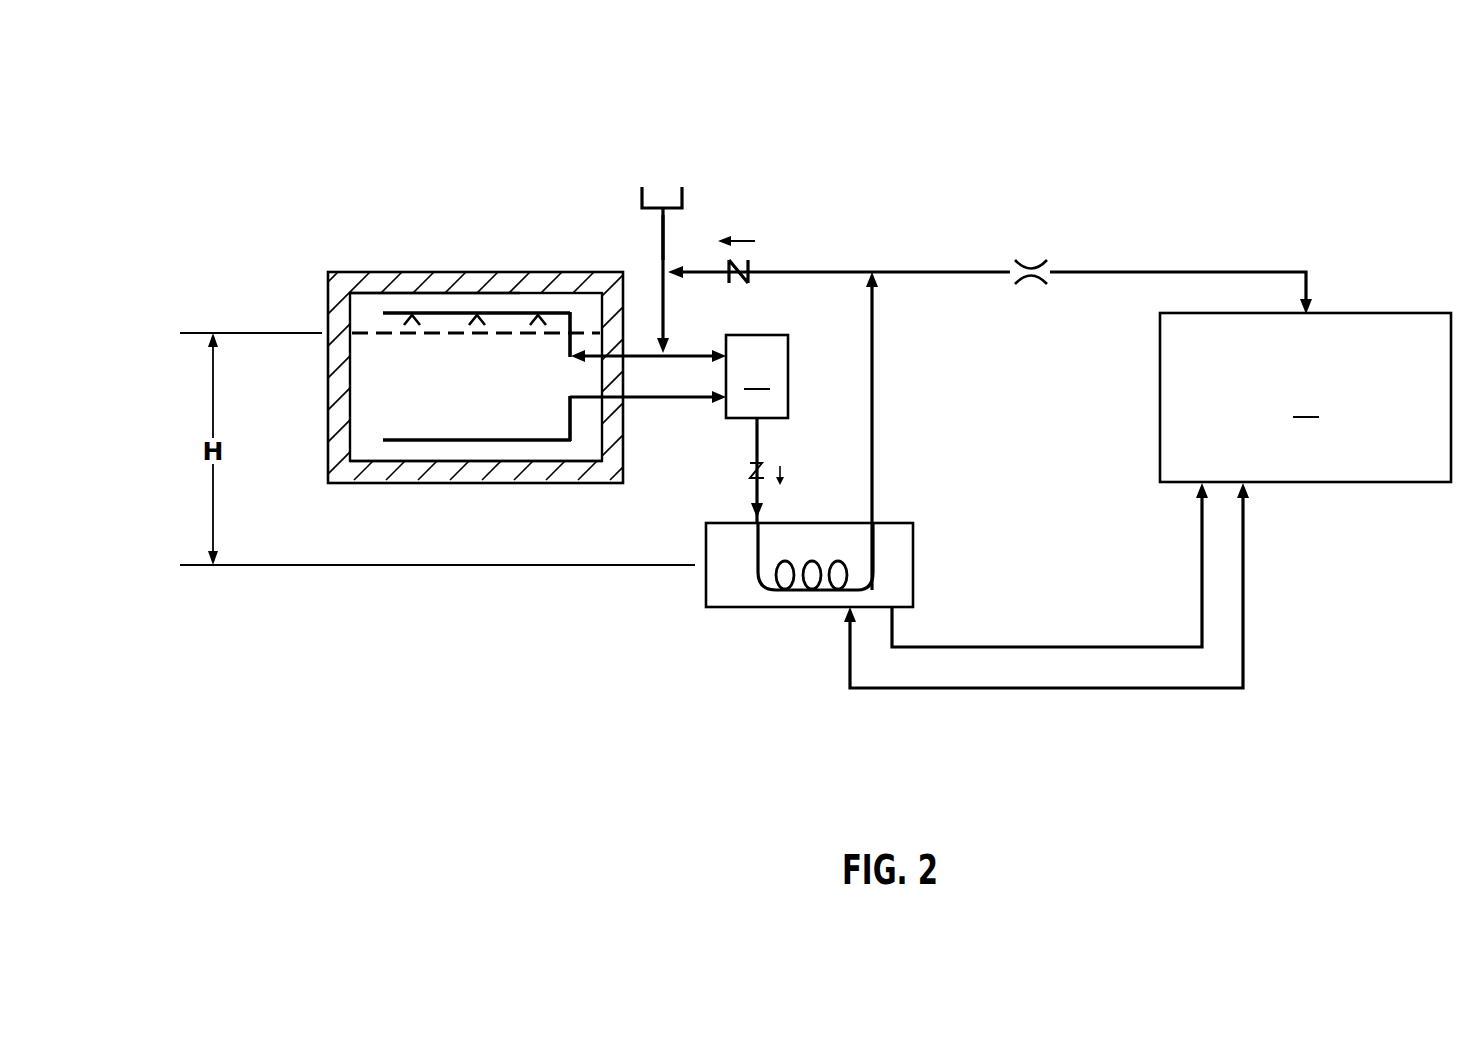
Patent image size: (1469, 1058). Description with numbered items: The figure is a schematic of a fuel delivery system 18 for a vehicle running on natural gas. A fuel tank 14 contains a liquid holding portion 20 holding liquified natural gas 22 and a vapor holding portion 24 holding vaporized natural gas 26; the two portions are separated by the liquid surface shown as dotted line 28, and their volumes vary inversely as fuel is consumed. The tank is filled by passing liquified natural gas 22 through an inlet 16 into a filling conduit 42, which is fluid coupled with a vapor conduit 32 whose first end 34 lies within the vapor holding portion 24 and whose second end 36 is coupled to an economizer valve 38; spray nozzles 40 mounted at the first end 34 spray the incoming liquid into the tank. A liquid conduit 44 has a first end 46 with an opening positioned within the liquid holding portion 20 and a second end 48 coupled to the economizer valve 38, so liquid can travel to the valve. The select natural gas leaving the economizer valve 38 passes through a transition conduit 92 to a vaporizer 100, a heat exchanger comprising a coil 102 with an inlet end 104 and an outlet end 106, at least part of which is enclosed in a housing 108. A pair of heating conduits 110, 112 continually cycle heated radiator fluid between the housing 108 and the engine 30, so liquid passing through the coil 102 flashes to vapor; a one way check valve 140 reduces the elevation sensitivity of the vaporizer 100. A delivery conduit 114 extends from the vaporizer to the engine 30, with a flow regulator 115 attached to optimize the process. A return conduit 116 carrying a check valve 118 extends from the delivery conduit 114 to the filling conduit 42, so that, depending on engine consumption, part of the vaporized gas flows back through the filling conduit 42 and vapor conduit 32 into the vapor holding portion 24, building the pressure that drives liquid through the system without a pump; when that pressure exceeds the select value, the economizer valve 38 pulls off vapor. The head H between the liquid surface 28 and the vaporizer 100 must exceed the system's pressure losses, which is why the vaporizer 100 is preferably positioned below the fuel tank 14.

The fuel tank 14 is at (373, 470).
The inlet 16 is at (684, 196).
The fuel delivery system 18 is at (1024, 132).
The liquid holding portion 20 is at (353, 405).
The liquified natural gas 22 is at (508, 450).
The vapor holding portion 24 is at (362, 296).
The vaporized natural gas 26 is at (455, 303).
The surface of liquified natural gas 28 is at (386, 338).
The engine 30 is at (1305, 397).
The vapor conduit 32 is at (572, 323).
The first end of vapor conduit 34 is at (397, 308).
The second end of vapor conduit 36 is at (683, 352).
The economizer valve 38 is at (757, 376).
The spray nozzles 40 is at (480, 325).
The filling conduit 42 is at (667, 238).
The liquid conduit 44 is at (575, 420).
The first end of liquid conduit 46 is at (433, 430).
The second end of liquid conduit 48 is at (680, 400).
The transition conduit 92 is at (757, 462).
The vaporizer 100 is at (720, 640).
The coil 102 is at (797, 591).
The inlet end 104 is at (752, 523).
The outlet end 106 is at (875, 523).
The housing 108 is at (915, 577).
The heating conduit 110 is at (1118, 688).
The heating conduit 112 is at (1083, 647).
The delivery conduit 114 is at (1158, 272).
The flow regulator 115 is at (1035, 263).
The return conduit 116 is at (818, 272).
The check valve 118 is at (745, 263).
The one way check valve 140 is at (765, 466).